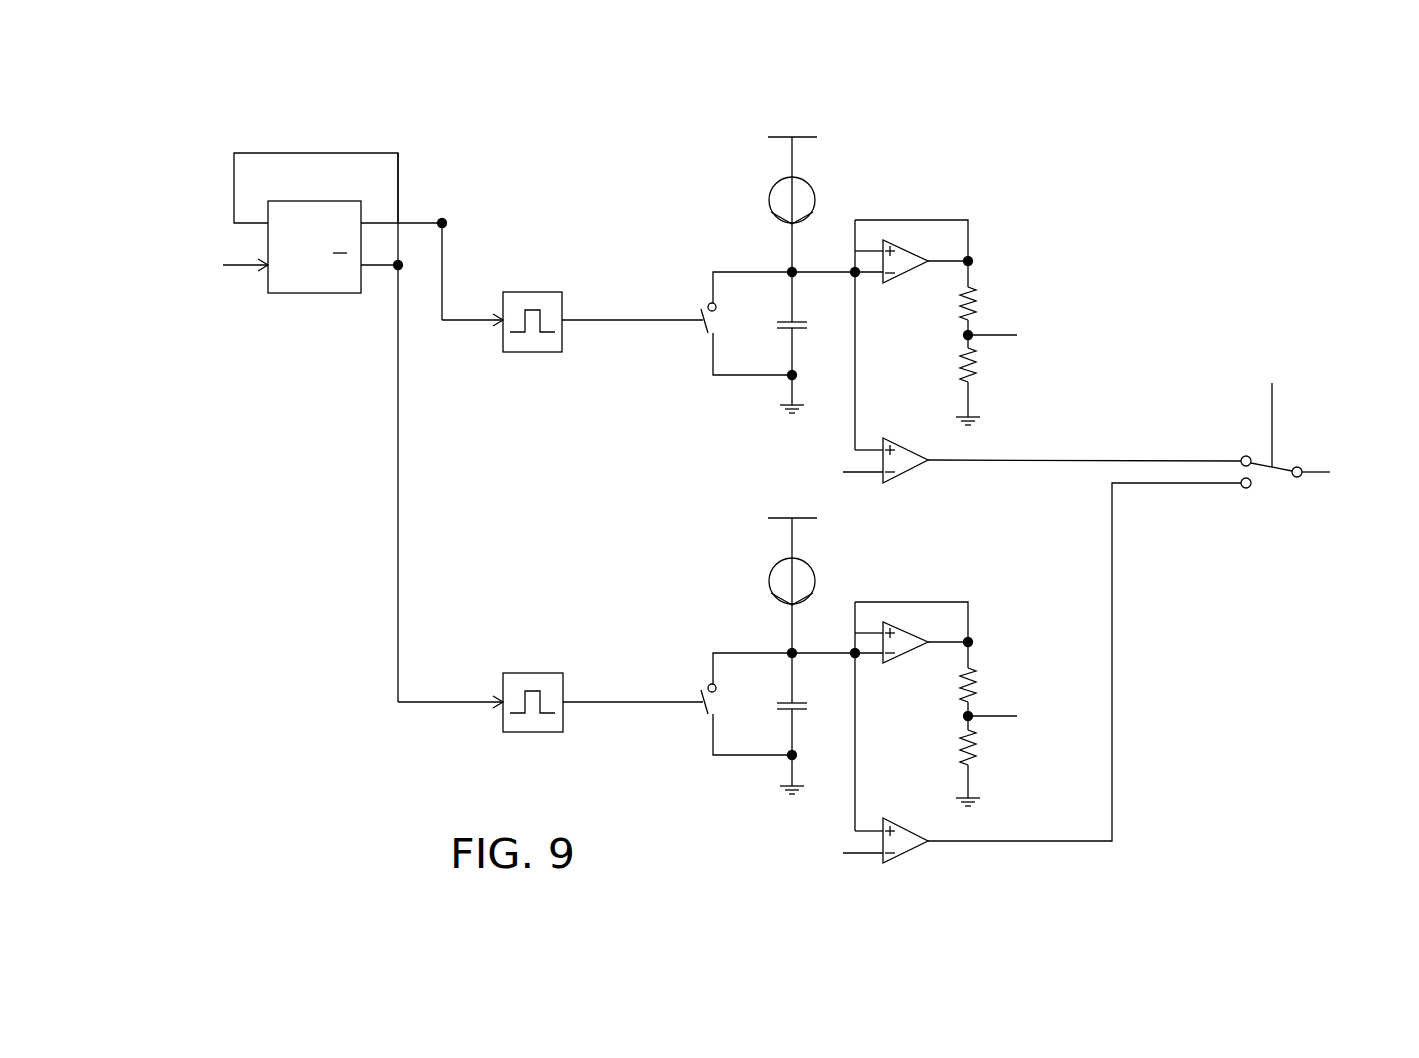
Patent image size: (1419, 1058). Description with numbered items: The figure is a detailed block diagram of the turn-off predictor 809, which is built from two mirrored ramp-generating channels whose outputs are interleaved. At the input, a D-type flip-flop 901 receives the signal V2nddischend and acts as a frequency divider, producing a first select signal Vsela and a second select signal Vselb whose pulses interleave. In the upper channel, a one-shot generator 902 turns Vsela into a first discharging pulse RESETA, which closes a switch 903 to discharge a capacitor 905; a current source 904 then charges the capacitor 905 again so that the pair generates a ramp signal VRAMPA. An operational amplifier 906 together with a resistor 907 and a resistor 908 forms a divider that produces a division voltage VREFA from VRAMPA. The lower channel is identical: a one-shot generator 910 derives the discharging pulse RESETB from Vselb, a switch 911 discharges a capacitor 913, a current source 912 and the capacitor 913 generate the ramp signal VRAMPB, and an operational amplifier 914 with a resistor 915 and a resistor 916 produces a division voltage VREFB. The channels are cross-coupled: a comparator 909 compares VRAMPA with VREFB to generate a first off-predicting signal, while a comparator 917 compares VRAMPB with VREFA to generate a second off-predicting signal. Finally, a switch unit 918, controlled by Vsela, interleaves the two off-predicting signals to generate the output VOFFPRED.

The turn-off predictor 809 is at (1240, 152).
The D-type flip-flop 901 is at (300, 293).
The one-shot generator 902 is at (548, 292).
The switch 903 is at (703, 335).
The current source 904 is at (815, 192).
The capacitor 905 is at (800, 332).
The operational amplifier 906 is at (900, 284).
The resistor 907 is at (975, 299).
The resistor 908 is at (978, 361).
The comparator 909 is at (912, 470).
The one-shot generator 910 is at (536, 673).
The switch 911 is at (703, 712).
The current source 912 is at (812, 575).
The capacitor 913 is at (800, 713).
The operational amplifier 914 is at (900, 664).
The resistor 915 is at (978, 681).
The resistor 916 is at (978, 741).
The comparator 917 is at (912, 851).
The switch unit 918 is at (1270, 478).